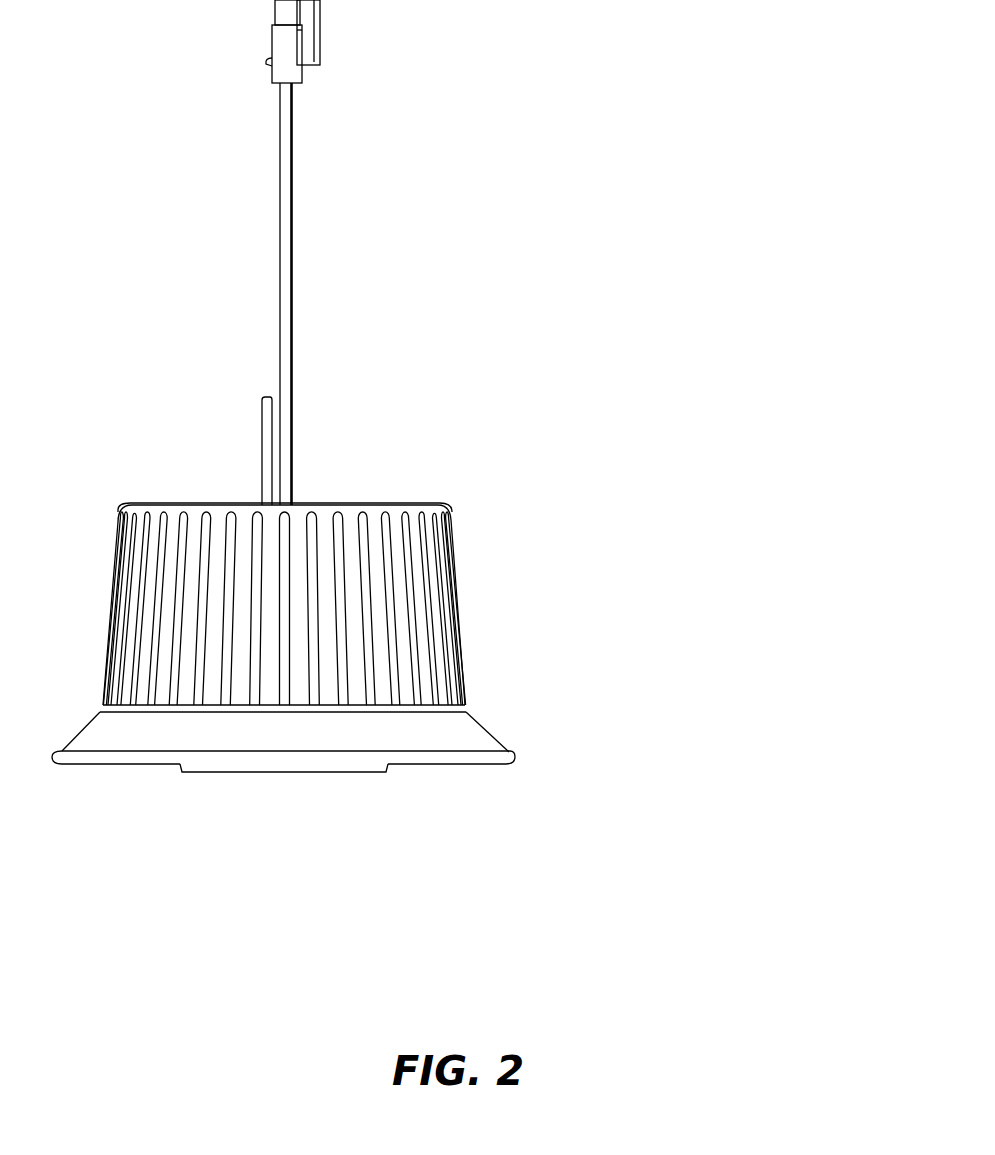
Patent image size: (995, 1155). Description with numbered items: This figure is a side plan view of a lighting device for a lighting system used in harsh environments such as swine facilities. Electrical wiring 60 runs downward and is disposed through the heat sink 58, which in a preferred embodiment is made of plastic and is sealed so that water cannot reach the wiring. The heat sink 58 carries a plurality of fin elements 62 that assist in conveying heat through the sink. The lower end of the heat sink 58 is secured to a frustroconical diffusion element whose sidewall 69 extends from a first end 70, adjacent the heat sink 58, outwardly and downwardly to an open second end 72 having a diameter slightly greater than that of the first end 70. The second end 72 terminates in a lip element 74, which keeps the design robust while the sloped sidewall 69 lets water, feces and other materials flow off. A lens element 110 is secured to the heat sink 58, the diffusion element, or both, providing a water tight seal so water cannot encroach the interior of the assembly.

The electrical wiring 60 is at (291, 225).
The fin elements 62 is at (452, 525).
The heat sink 58 is at (425, 565).
The first end 70 is at (466, 702).
The sidewall 69 is at (482, 746).
The lip element 74 is at (510, 752).
The open second end 72 is at (514, 762).
The lens element 110 is at (340, 773).